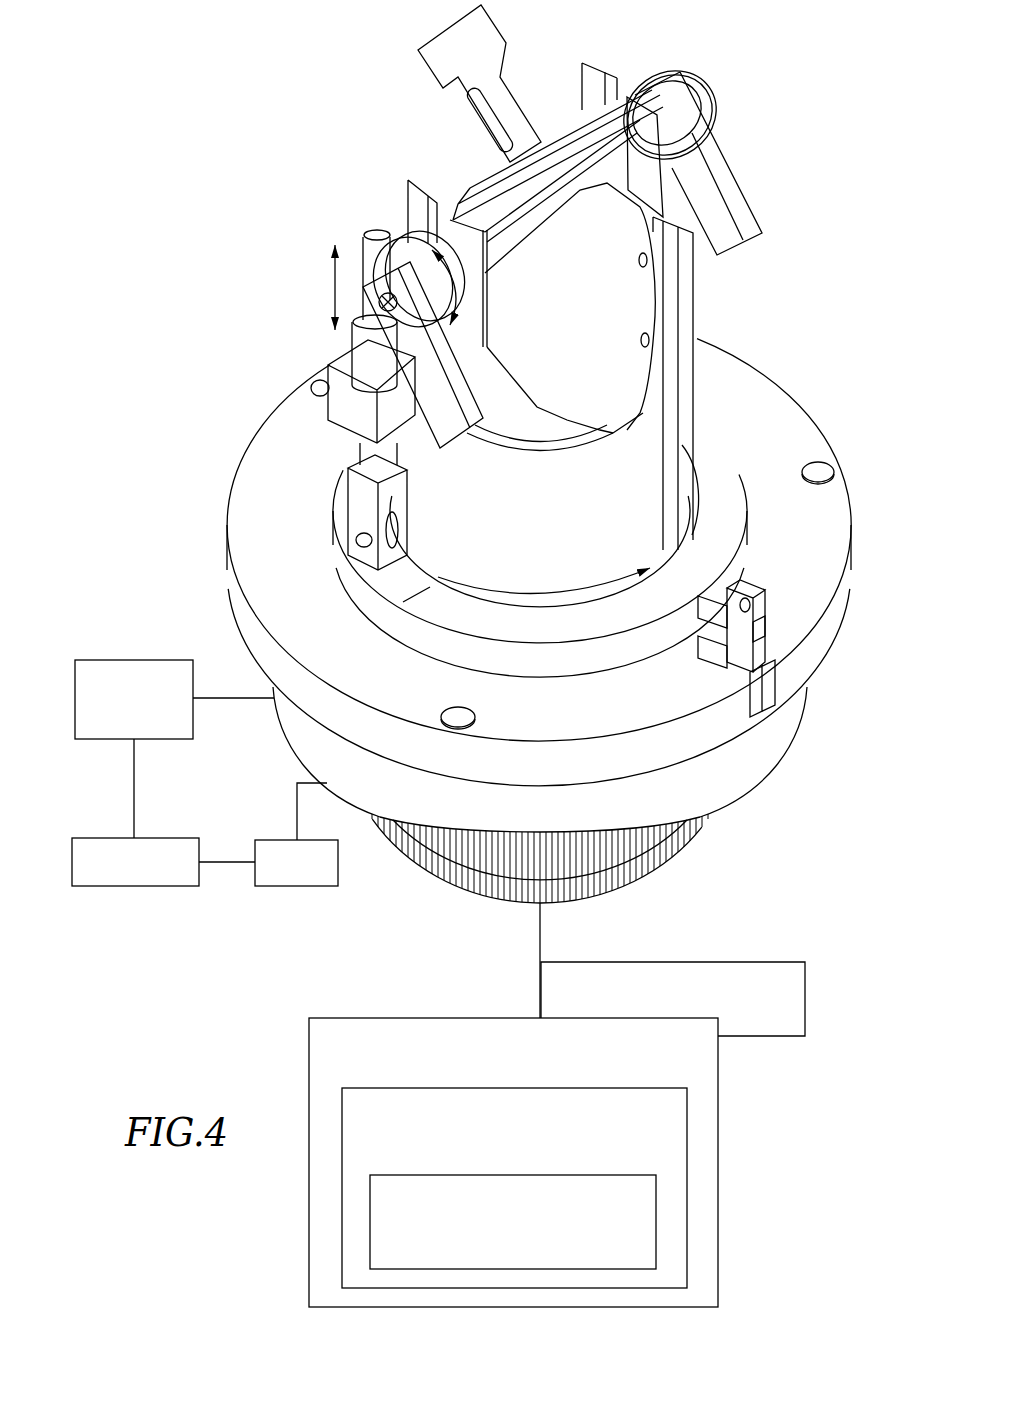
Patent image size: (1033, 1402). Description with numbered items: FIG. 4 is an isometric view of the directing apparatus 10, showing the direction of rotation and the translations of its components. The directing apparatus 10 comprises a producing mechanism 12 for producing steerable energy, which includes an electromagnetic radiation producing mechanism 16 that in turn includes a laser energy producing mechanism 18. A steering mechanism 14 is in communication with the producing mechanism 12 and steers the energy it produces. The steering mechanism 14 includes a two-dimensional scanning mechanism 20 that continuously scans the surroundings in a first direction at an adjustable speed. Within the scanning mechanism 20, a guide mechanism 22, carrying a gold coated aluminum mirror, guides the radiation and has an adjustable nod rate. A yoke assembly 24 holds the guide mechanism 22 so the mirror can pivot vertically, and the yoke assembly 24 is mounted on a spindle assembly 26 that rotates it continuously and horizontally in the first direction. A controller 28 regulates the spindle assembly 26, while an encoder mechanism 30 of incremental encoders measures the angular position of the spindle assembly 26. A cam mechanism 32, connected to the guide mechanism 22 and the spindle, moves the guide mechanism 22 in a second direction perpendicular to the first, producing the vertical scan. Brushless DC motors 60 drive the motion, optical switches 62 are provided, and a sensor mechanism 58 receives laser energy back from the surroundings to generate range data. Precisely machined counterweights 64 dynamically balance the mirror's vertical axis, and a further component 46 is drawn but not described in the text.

The directing apparatus 10 is at (257, 134).
The producing mechanism 12 is at (309, 1064).
The steering mechanism 14 is at (761, 127).
The electromagnetic radiation producing mechanism 16 is at (688, 1107).
The laser energy producing mechanism 18 is at (656, 1223).
The scanning mechanism 20 is at (199, 394).
The guide mechanism 22 is at (624, 66).
The yoke assembly 24 is at (771, 292).
The spindle assembly 26 is at (800, 752).
The controller 28 is at (100, 838).
The encoder mechanism 30 is at (127, 660).
The cam mechanism 32 is at (389, 190).
The flange 46 is at (789, 399).
The sensor mechanism 58 is at (775, 961).
The motor 60 is at (278, 840).
The optical switch 62 is at (752, 592).
The counterweights 64 is at (431, 42).